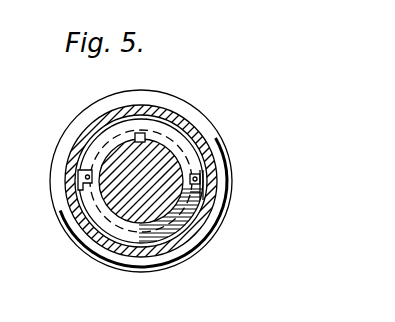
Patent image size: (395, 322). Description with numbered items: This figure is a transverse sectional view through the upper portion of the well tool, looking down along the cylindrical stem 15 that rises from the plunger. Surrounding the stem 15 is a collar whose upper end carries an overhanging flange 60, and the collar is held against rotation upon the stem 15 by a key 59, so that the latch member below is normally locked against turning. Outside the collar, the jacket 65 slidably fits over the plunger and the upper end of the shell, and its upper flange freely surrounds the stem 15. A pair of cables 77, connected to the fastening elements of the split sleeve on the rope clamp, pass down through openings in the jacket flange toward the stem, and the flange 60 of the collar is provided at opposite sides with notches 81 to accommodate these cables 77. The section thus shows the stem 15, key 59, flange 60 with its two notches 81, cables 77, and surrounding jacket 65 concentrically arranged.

The stem 15 is at (132, 200).
The key 59 is at (141, 138).
The overhanging flange 60 is at (190, 148).
The jacket 65 is at (210, 171).
The cables 77 is at (84, 179).
The notches 81 is at (212, 203).